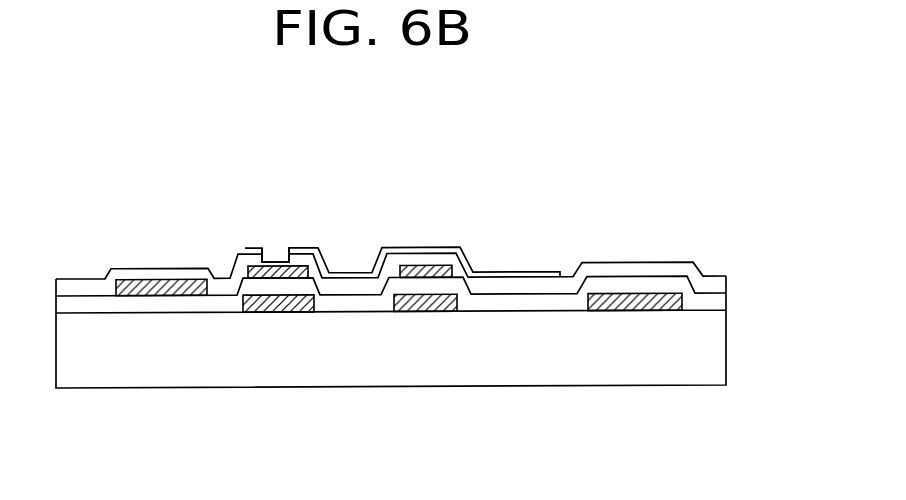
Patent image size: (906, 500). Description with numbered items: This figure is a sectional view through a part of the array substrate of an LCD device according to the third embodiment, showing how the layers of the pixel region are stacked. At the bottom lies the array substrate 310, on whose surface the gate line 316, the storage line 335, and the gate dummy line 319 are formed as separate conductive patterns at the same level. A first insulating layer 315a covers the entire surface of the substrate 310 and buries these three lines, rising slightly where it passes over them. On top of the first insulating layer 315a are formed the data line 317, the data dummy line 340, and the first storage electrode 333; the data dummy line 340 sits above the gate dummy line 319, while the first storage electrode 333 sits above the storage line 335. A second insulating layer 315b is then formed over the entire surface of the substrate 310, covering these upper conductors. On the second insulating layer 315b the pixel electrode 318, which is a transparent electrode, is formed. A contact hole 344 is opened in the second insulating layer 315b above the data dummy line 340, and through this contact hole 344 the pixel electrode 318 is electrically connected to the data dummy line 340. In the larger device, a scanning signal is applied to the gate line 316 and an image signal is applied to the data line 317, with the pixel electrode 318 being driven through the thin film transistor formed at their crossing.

The array substrate 310 is at (713, 349).
The first insulating layer 315a is at (712, 303).
The second insulating layer 315b is at (715, 283).
The gate line 316 is at (632, 311).
The data line 317 is at (158, 297).
The pixel electrode 318 is at (517, 273).
The gate dummy line 319 is at (267, 313).
The first storage electrode 333 is at (442, 268).
The storage line 335 is at (417, 313).
The data dummy line 340 is at (300, 267).
The contact hole 344 is at (277, 238).